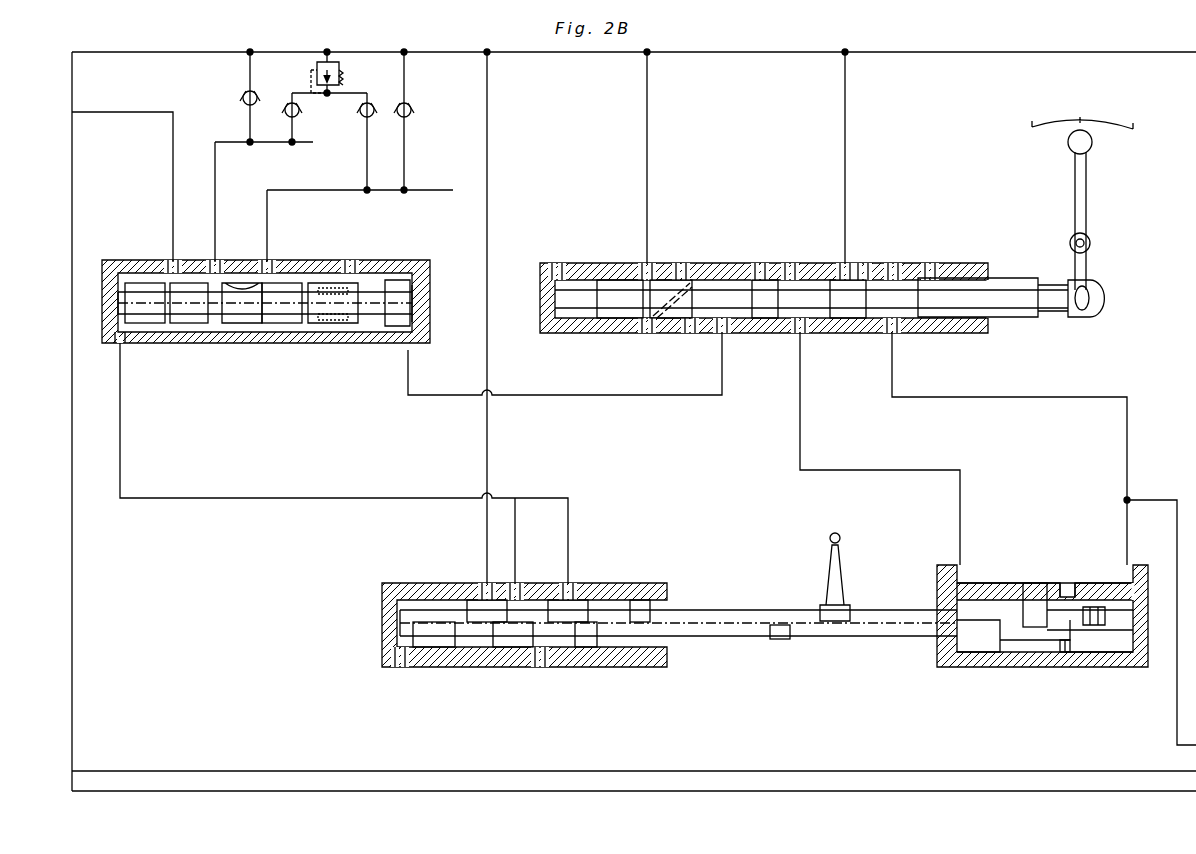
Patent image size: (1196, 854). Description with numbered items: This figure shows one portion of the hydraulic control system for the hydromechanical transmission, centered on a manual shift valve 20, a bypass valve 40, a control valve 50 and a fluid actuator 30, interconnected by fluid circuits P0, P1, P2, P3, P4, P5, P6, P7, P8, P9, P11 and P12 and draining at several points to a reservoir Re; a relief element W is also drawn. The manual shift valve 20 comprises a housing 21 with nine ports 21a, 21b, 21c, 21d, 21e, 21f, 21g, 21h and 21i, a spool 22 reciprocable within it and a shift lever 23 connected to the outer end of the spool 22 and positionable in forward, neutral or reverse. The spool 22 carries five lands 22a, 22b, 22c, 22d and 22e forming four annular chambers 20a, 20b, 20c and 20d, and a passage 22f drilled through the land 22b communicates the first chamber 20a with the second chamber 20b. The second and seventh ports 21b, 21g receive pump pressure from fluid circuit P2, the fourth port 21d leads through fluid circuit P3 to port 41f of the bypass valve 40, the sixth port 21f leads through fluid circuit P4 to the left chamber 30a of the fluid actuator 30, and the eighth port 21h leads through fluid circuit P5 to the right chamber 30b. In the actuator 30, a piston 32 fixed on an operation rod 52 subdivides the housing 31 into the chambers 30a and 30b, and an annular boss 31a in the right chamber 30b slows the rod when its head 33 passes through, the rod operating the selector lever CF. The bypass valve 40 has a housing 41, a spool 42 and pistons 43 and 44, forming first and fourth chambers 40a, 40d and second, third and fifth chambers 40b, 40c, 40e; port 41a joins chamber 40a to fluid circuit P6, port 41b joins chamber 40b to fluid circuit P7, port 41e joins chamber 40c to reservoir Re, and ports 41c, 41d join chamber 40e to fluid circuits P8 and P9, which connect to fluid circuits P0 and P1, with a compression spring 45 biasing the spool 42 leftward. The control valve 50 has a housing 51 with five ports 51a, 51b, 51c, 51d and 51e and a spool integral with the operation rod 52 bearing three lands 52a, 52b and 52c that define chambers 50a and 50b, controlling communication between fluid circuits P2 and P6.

The manual shift valve 20 is at (766, 212).
The first chamber 20a is at (645, 318).
The second chamber 20b is at (705, 280).
The third chamber 20c is at (790, 280).
The fourth chamber 20d is at (893, 280).
The housing 21 is at (863, 270).
The first port 21a is at (560, 268).
The second port 21b is at (645, 268).
The third port 21c is at (683, 268).
The fourth port 21d is at (690, 325).
The fifth port 21e is at (762, 268).
The sixth port 21f is at (800, 338).
The seventh port 21g is at (847, 268).
The eighth port 21h is at (895, 336).
The ninth port 21i is at (932, 268).
The spool 22 is at (1005, 278).
The first land 22a is at (614, 318).
The second land 22b is at (670, 318).
The third land 22c is at (765, 318).
The fourth land 22d is at (848, 318).
The fifth land 22e is at (965, 320).
The passage 22f is at (672, 300).
The shift lever 23 is at (1083, 175).
The fluid actuator 30 is at (1022, 545).
The left chamber 30a is at (990, 583).
The right chamber 30b is at (1130, 575).
The housing 31 is at (1090, 570).
The annular boss 31a is at (1065, 652).
The piston 32 is at (1035, 583).
The head 33 is at (1097, 625).
The bypass valve 40 is at (372, 345).
The first chamber 40a is at (128, 262).
The second chamber 40b is at (190, 323).
The third chamber 40c is at (335, 323).
The fourth chamber 40d is at (414, 290).
The fifth chamber 40e is at (240, 323).
The housing 41 is at (314, 268).
The port 41a is at (112, 347).
The port 41b is at (170, 262).
The port 41c is at (218, 262).
The port 41d is at (290, 240).
The port 41e is at (355, 268).
The sixth port 41f is at (415, 348).
The spool 42 is at (282, 323).
The piston 43 is at (145, 323).
The piston 44 is at (400, 310).
The compression spring 45 is at (368, 270).
The control valve 50 is at (620, 560).
The first chamber 50a is at (470, 647).
The second chamber 50b is at (590, 640).
The housing 51 is at (410, 590).
The first port 51a is at (398, 655).
The second port 51b is at (485, 590).
The third port 51c is at (517, 590).
The fourth port 51d is at (545, 655).
The fifth port 51e is at (572, 590).
The operation rod 52 is at (690, 600).
The first land 52a is at (430, 647).
The second land 52b is at (512, 647).
The third land 52c is at (585, 647).
The selector lever CF is at (838, 560).
The relief valve W is at (329, 72).
The reservoir Re is at (353, 268).
The fluid circuit P0 is at (274, 198).
The fluid circuit P1 is at (369, 221).
The fluid circuit P2 is at (533, 52).
The fluid circuit P3 is at (540, 397).
The fluid circuit P4 is at (802, 440).
The fluid circuit P5 is at (968, 399).
The fluid circuit P6 is at (122, 465).
The fluid circuit P7 is at (171, 140).
The fluid circuit P8 is at (215, 140).
The fluid circuit P9 is at (286, 188).
The oil passage P11 is at (707, 771).
The oil passage P12 is at (778, 791).